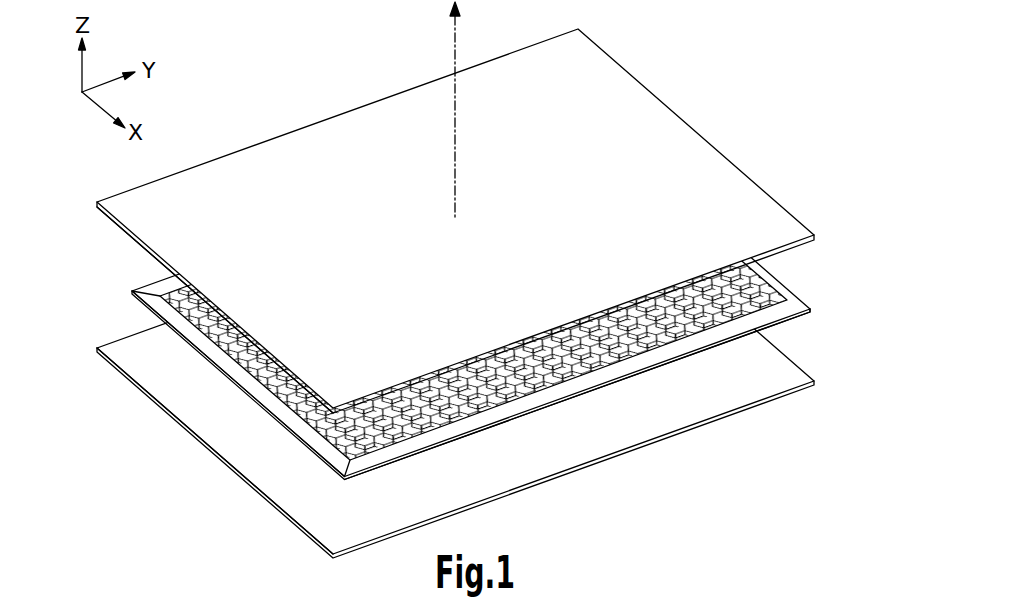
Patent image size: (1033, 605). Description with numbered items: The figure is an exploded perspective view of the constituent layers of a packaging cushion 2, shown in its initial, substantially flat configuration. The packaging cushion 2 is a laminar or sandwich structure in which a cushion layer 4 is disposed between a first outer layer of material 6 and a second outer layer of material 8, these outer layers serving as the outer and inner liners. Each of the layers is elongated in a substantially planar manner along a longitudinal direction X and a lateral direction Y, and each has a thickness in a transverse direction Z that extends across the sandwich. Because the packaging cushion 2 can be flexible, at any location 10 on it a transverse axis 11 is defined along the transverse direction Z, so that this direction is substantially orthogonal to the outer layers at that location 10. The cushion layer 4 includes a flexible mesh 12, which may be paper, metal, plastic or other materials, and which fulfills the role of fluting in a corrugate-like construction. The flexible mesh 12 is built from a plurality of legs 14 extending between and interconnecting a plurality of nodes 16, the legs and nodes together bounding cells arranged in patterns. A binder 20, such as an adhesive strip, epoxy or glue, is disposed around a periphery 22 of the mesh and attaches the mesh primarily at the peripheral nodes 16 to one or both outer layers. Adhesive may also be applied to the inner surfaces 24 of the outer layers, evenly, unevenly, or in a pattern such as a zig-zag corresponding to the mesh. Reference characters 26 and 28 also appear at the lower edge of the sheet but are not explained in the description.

The packaging cushion 2 is at (257, 97).
The cushion layer 4 is at (810, 290).
The first outer layer of material 6 is at (728, 142).
The second outer layer of material 8 is at (798, 400).
The location 10 is at (445, 211).
The transverse axis 11 is at (456, 117).
The flexible mesh 12 is at (187, 280).
The legs 14 is at (550, 358).
The nodes 16 is at (455, 368).
The binder 20 is at (150, 305).
The periphery 22 is at (783, 314).
The inner surfaces 24 is at (232, 421).
The lower edge 26 is at (185, 600).
The lower edge 28 is at (775, 600).